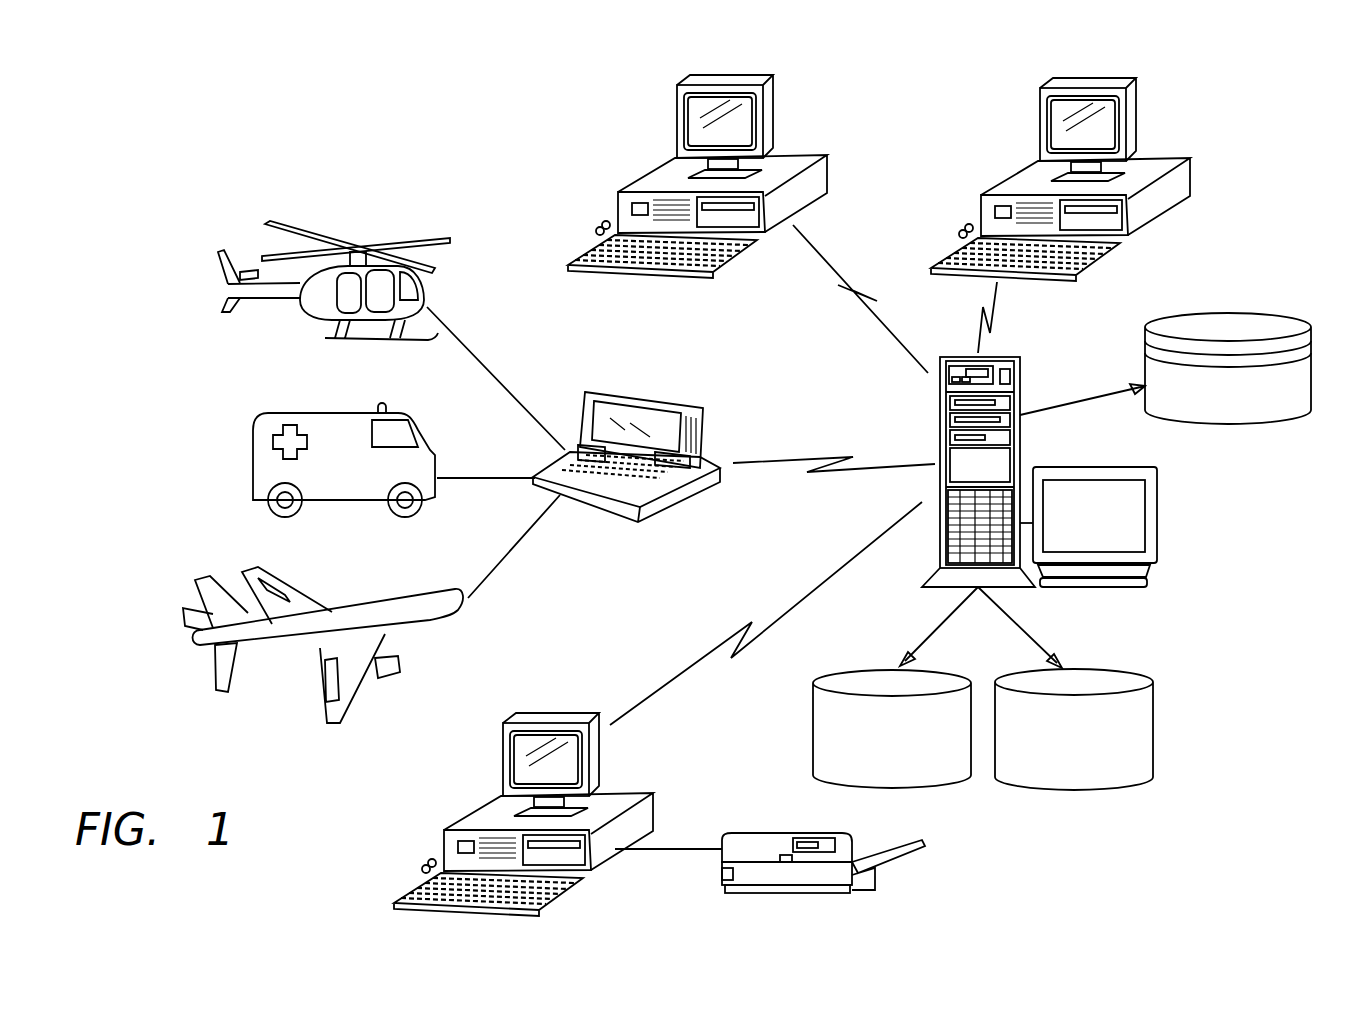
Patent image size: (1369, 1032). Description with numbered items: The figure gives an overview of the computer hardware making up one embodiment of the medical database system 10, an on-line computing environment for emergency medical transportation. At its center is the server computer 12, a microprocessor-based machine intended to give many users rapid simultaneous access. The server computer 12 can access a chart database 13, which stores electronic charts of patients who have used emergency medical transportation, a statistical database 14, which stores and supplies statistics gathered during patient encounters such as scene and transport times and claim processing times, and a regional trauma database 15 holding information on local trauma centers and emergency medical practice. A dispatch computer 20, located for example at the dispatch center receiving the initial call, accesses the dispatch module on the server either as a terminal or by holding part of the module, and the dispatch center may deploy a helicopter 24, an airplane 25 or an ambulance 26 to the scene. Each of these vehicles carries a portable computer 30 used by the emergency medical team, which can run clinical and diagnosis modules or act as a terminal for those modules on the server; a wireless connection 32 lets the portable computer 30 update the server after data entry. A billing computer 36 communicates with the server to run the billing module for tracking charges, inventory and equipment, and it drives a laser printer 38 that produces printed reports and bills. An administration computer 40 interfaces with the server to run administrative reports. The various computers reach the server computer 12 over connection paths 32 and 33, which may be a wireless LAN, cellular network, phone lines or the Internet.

The medical database system 10 is at (1262, 632).
The server computer 12 is at (1083, 467).
The chart database 13 is at (1235, 422).
The statistical database 14 is at (1105, 668).
The regional trauma database 15 is at (872, 670).
The dispatch computer 20 is at (788, 152).
The helicopter 24 is at (355, 250).
The airplane 25 is at (410, 595).
The ambulance 26 is at (338, 412).
The portable computer 30 is at (630, 393).
The wireless connection 32 is at (770, 458).
The connection paths 33 is at (827, 250).
The billing computer 36 is at (575, 713).
The laser printer 38 is at (820, 833).
The administration computer 40 is at (1030, 150).